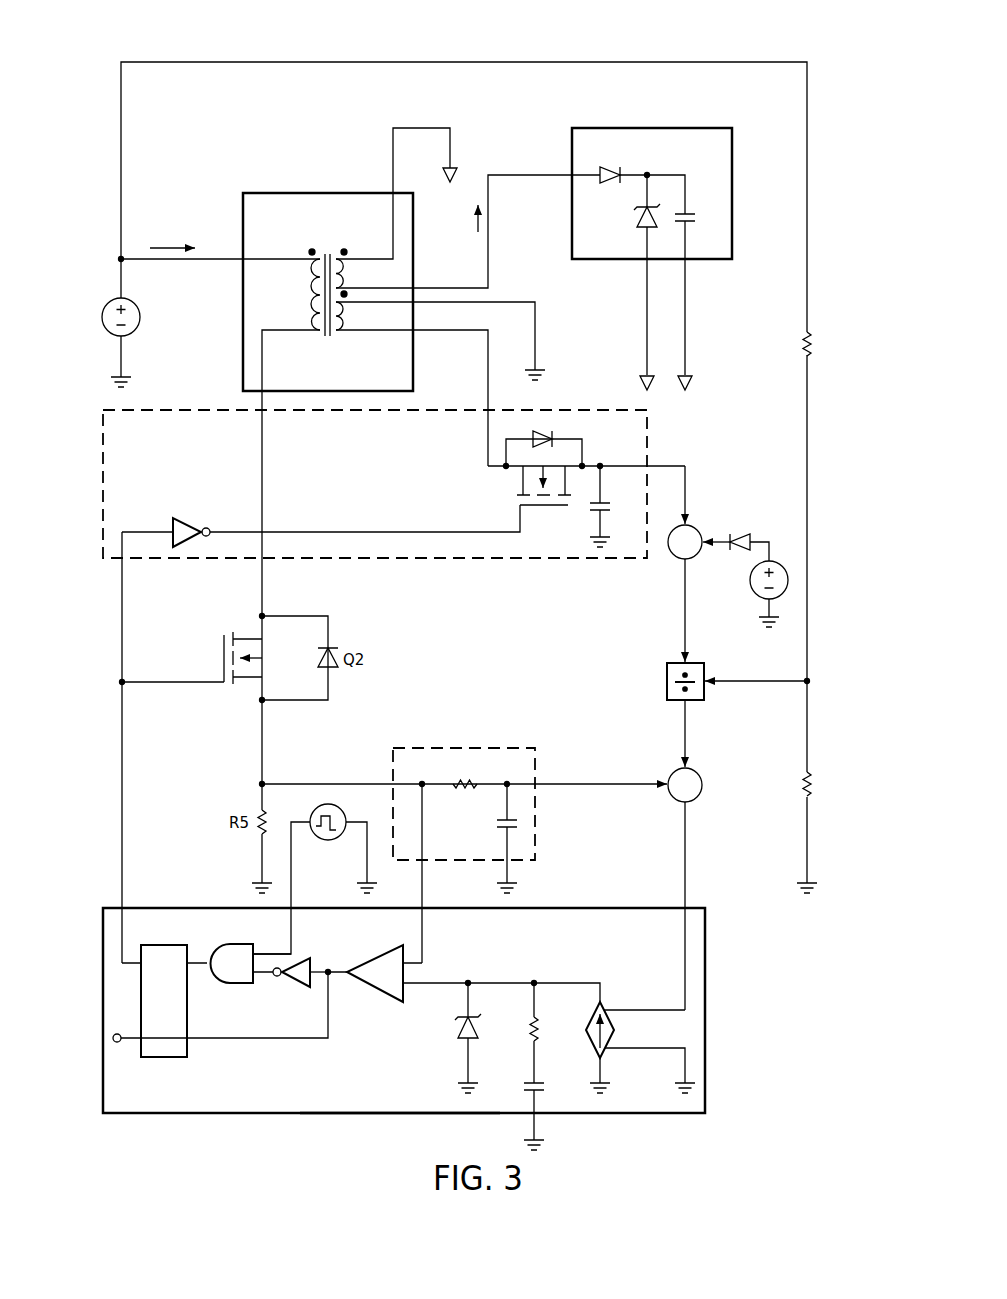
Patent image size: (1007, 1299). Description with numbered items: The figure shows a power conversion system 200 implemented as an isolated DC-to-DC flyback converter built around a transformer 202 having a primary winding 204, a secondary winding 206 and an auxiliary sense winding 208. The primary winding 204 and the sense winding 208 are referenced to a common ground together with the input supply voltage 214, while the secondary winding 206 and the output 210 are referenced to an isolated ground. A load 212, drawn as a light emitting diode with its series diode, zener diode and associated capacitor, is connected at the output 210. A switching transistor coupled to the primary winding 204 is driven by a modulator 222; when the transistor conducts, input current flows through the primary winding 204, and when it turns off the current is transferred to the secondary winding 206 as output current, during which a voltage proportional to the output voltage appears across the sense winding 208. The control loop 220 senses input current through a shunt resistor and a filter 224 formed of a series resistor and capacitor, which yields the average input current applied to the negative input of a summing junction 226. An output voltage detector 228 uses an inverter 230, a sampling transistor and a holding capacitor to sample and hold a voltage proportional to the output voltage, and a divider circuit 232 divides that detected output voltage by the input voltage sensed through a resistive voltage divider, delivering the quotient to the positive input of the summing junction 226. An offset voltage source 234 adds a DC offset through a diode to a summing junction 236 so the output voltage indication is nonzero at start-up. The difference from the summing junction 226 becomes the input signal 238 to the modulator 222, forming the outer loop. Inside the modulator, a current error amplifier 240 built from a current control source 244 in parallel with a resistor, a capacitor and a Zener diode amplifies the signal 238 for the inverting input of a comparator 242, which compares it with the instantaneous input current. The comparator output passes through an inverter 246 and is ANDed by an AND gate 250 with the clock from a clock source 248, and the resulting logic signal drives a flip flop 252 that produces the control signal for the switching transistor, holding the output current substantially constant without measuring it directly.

The power conversion system 200 is at (166, 52).
The transformer 202 is at (328, 263).
The primary winding 204 is at (293, 253).
The secondary winding 206 is at (365, 253).
The auxiliary sense winding 208 is at (352, 332).
The output 210 is at (490, 232).
The load 212 is at (676, 125).
The input supply voltage 214 is at (113, 297).
The control loop 220 is at (446, 1042).
The modulator 222 is at (311, 1117).
The filter 224 is at (540, 815).
The summing junction 226 is at (692, 806).
The output voltage detector 228 is at (412, 484).
The inverter 230 is at (205, 510).
The divider circuit 232 is at (706, 693).
The offset voltage source 234 is at (757, 598).
The summing node 236 is at (714, 550).
The input signal 238 is at (687, 853).
The current error amplifier 240 is at (505, 958).
The comparator 242 is at (372, 992).
The current control source 244 is at (606, 1055).
The inverter 246 is at (287, 980).
The clock source 248 is at (330, 842).
The AND gate 250 is at (232, 985).
The flip-flop 252 is at (163, 1058).